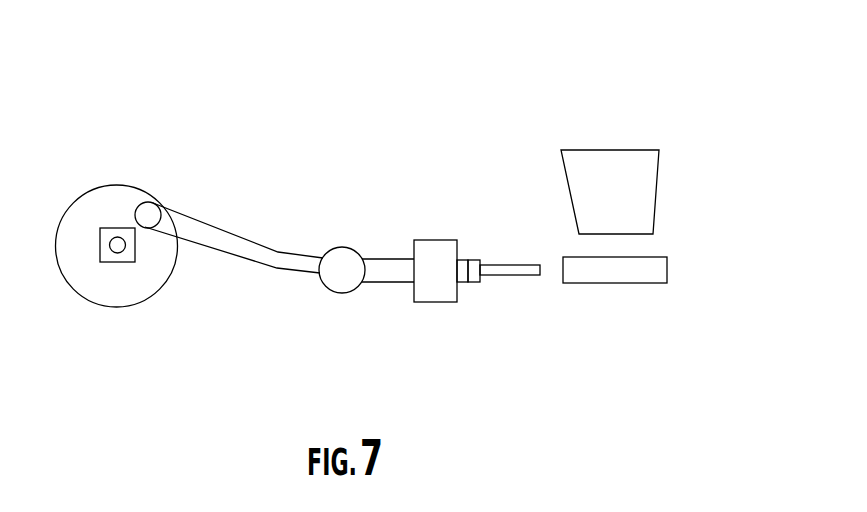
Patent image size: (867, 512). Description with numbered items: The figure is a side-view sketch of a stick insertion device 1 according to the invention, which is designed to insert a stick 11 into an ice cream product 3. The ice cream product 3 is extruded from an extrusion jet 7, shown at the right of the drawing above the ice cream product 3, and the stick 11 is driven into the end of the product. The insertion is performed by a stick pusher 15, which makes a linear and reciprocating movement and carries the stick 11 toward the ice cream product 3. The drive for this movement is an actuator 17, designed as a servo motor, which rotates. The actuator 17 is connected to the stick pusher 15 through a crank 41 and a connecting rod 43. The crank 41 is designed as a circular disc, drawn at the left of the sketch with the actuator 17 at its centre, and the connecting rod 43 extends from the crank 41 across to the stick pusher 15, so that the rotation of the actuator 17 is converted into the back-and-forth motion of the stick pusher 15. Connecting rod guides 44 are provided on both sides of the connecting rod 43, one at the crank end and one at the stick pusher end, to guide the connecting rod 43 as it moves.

The stick insertion device 1 is at (252, 78).
The ice cream product 3 is at (684, 263).
The extrusion jet 7 is at (686, 153).
The stick 11 is at (518, 305).
The stick pusher 15 is at (403, 211).
The actuator 17 is at (112, 232).
The crank 41 is at (134, 183).
The connecting rod 43 is at (283, 213).
The connecting rod guides 44 is at (148, 244).